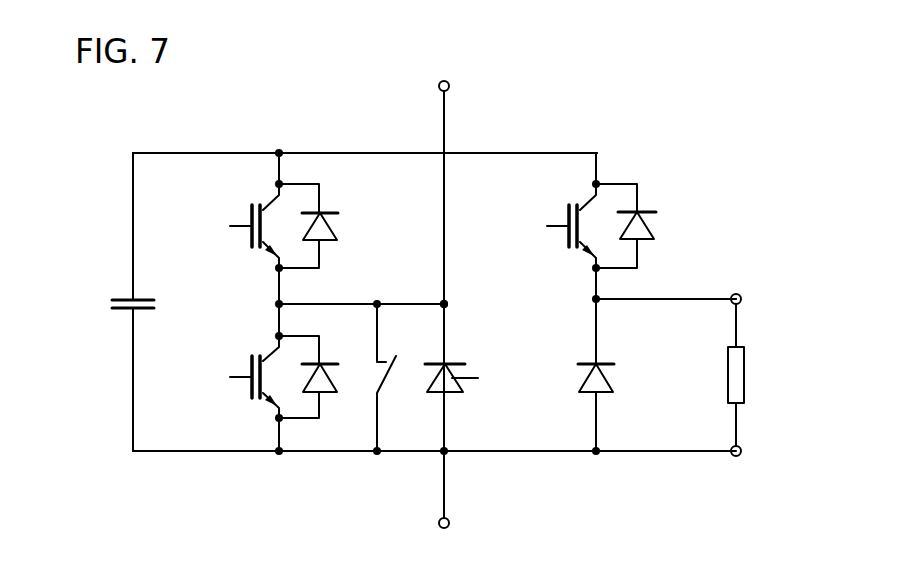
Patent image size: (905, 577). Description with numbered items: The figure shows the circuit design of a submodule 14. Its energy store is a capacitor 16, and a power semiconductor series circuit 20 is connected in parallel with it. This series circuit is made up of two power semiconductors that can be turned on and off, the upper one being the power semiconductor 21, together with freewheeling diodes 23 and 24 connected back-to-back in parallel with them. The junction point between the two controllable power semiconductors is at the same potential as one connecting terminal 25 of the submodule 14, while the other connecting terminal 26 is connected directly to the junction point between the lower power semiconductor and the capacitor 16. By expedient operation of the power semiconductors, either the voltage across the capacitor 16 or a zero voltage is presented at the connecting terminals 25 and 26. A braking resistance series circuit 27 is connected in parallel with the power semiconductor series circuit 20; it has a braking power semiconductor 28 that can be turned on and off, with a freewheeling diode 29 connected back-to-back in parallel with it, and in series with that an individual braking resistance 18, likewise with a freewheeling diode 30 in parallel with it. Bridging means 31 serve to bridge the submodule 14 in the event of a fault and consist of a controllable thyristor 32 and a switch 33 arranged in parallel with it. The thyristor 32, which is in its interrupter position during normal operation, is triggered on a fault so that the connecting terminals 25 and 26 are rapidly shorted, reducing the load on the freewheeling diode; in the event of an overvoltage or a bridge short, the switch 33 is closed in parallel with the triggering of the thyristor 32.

The submodule 14 is at (720, 120).
The capacitor 16 is at (124, 312).
The braking resistance 18 is at (745, 378).
The power semiconductor series circuit 20 is at (184, 269).
The power semiconductor 21 is at (251, 226).
The freewheeling diode 23 is at (331, 211).
The freewheeling diode 24 is at (323, 395).
The connecting terminal 25 is at (449, 85).
The connecting terminal 26 is at (450, 526).
The braking resistance series circuit 27 is at (560, 317).
The braking power semiconductor 28 is at (568, 222).
The freewheeling diode 29 is at (653, 232).
The freewheeling diode 30 is at (606, 394).
The bridging means 31 is at (468, 284).
The thyristor 32 is at (453, 394).
The switch 33 is at (390, 372).